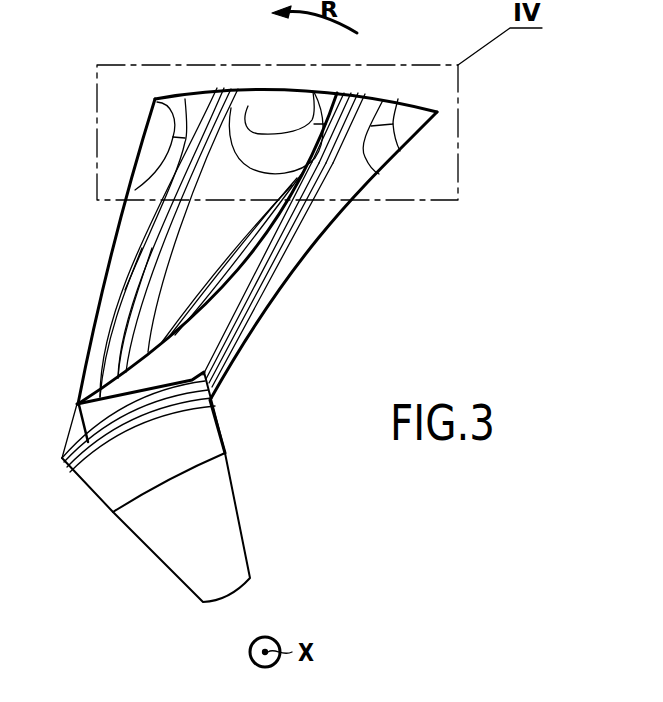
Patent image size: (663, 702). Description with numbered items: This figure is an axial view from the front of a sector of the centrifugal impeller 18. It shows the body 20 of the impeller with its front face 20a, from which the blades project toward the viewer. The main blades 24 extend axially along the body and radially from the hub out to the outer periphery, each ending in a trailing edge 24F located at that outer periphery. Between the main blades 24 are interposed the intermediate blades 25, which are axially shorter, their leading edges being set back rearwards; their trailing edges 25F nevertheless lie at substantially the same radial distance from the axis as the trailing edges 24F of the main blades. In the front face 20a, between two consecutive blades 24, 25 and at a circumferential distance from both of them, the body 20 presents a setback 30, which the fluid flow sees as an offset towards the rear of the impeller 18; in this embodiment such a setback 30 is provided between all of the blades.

The impeller 18 is at (390, 86).
The body 20 is at (280, 277).
The front face 20a is at (294, 238).
The main blades 24 is at (198, 342).
The trailing edge 24F is at (368, 96).
The intermediate blades 25 is at (148, 245).
The trailing edges 25F is at (227, 89).
The setback 30 is at (268, 112).